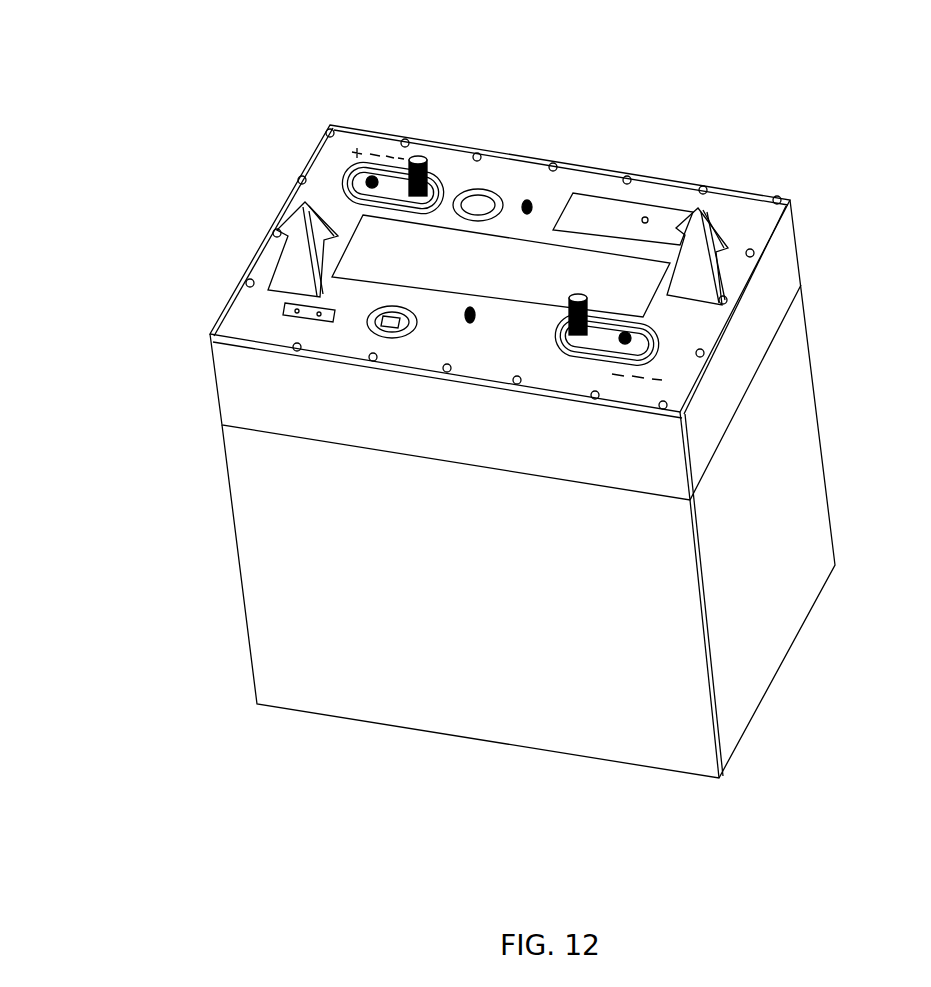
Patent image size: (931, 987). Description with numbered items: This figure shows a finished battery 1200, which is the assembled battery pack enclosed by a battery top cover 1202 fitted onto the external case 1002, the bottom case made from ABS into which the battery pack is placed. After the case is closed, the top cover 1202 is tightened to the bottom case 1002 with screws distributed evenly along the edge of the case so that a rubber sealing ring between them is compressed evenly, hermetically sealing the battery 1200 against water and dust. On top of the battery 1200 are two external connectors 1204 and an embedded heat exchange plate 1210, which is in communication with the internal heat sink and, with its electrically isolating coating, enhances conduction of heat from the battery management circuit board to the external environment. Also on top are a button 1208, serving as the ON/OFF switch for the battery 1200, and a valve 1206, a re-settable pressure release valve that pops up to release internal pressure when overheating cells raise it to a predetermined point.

The finished battery 1200 is at (268, 86).
The external case 1002 is at (247, 657).
The battery top cover 1202 is at (215, 395).
The external connectors 1204 is at (420, 165).
The valve 1206 is at (490, 190).
The button 1208 is at (397, 340).
The heat exchange plate 1210 is at (521, 282).